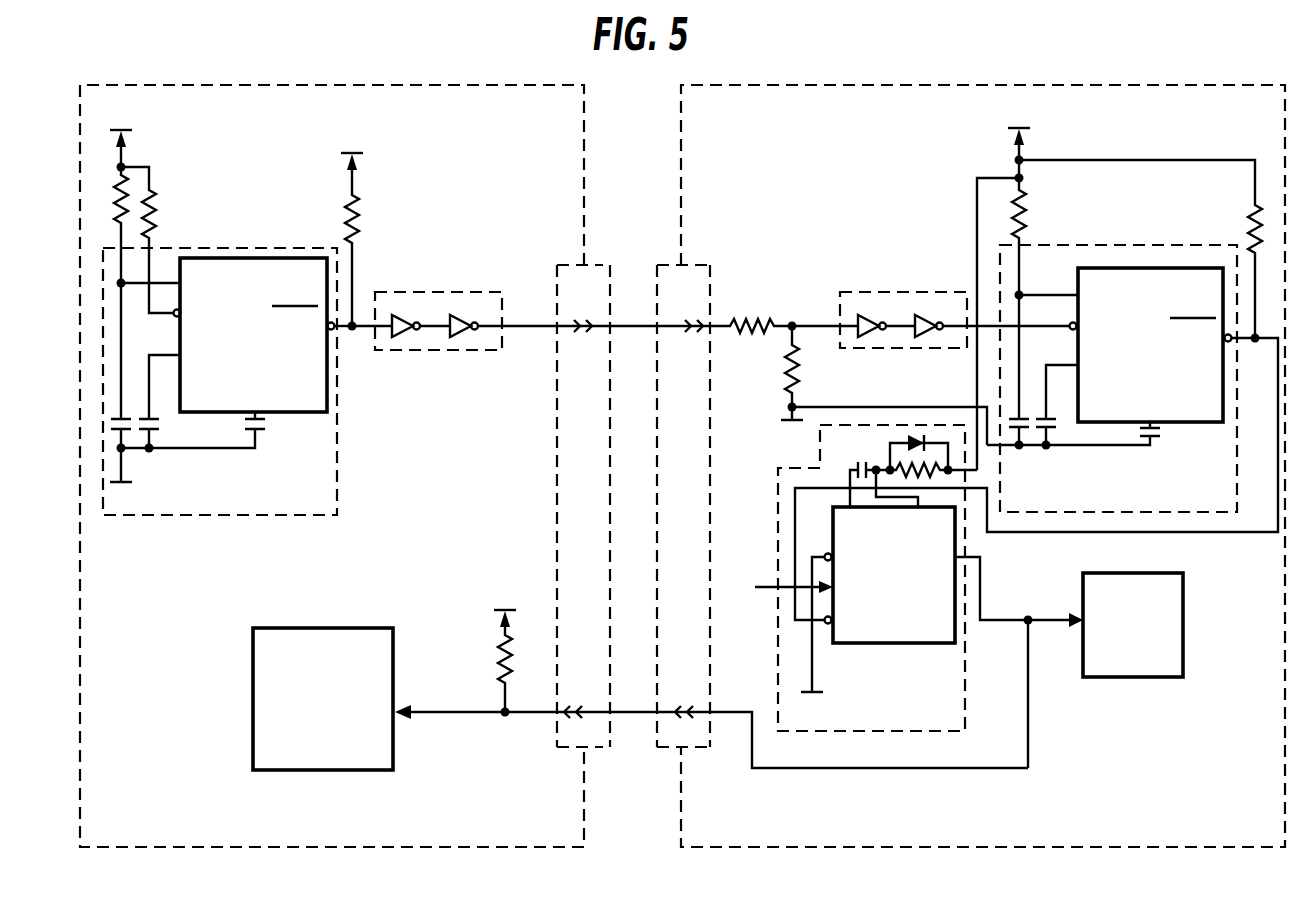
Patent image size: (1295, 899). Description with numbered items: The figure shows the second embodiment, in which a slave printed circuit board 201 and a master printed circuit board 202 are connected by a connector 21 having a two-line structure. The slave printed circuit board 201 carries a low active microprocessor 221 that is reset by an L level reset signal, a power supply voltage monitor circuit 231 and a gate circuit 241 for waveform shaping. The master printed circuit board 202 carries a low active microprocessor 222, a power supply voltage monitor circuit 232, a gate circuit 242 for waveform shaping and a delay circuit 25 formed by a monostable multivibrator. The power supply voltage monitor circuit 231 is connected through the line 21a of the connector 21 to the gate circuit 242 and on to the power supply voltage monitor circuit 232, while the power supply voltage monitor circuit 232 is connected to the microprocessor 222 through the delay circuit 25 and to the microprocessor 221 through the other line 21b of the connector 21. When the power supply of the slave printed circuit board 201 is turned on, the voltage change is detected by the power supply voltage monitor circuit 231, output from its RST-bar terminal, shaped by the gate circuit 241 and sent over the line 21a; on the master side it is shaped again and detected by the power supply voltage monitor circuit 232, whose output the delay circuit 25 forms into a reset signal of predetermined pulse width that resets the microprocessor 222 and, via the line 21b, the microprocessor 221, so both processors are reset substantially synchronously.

The slave printed circuit board 201 is at (333, 852).
The master printed circuit board 202 is at (925, 852).
The connector 21 is at (621, 750).
The line of connector 21a is at (634, 318).
The other line of connector 21b is at (633, 705).
The power supply voltage monitor circuit 231 is at (215, 247).
The power supply voltage monitor circuit 232 is at (1115, 245).
The gate circuit 241 is at (420, 292).
The gate circuit 242 is at (885, 292).
The low active microprocessor 221 is at (305, 628).
The low active microprocessor 222 is at (1165, 573).
The delay circuit 25 is at (982, 720).